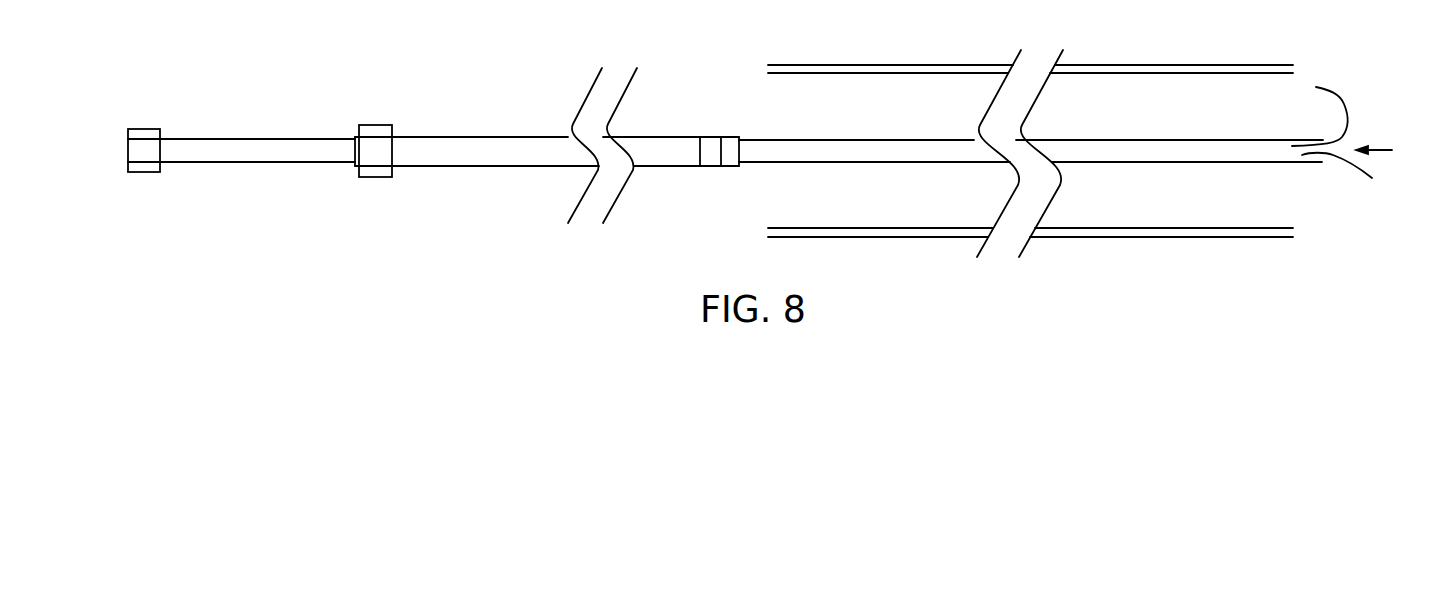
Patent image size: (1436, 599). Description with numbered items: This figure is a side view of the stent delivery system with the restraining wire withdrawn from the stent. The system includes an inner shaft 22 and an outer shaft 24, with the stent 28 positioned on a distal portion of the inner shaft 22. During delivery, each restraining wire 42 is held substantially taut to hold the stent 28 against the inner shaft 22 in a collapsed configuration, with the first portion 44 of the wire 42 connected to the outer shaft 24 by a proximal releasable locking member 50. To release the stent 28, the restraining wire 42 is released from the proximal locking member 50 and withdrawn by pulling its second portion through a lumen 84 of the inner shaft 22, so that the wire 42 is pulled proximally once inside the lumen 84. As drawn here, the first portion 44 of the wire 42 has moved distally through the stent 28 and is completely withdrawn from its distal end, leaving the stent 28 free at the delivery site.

The inner shaft 22 is at (1303, 163).
The outer shaft 24 is at (663, 167).
The stent 28 is at (1157, 64).
The restraining wire 42 is at (1341, 99).
The first portion 44 is at (1368, 176).
The proximal releasable locking member 50 is at (712, 167).
The lumen 84 is at (1262, 152).